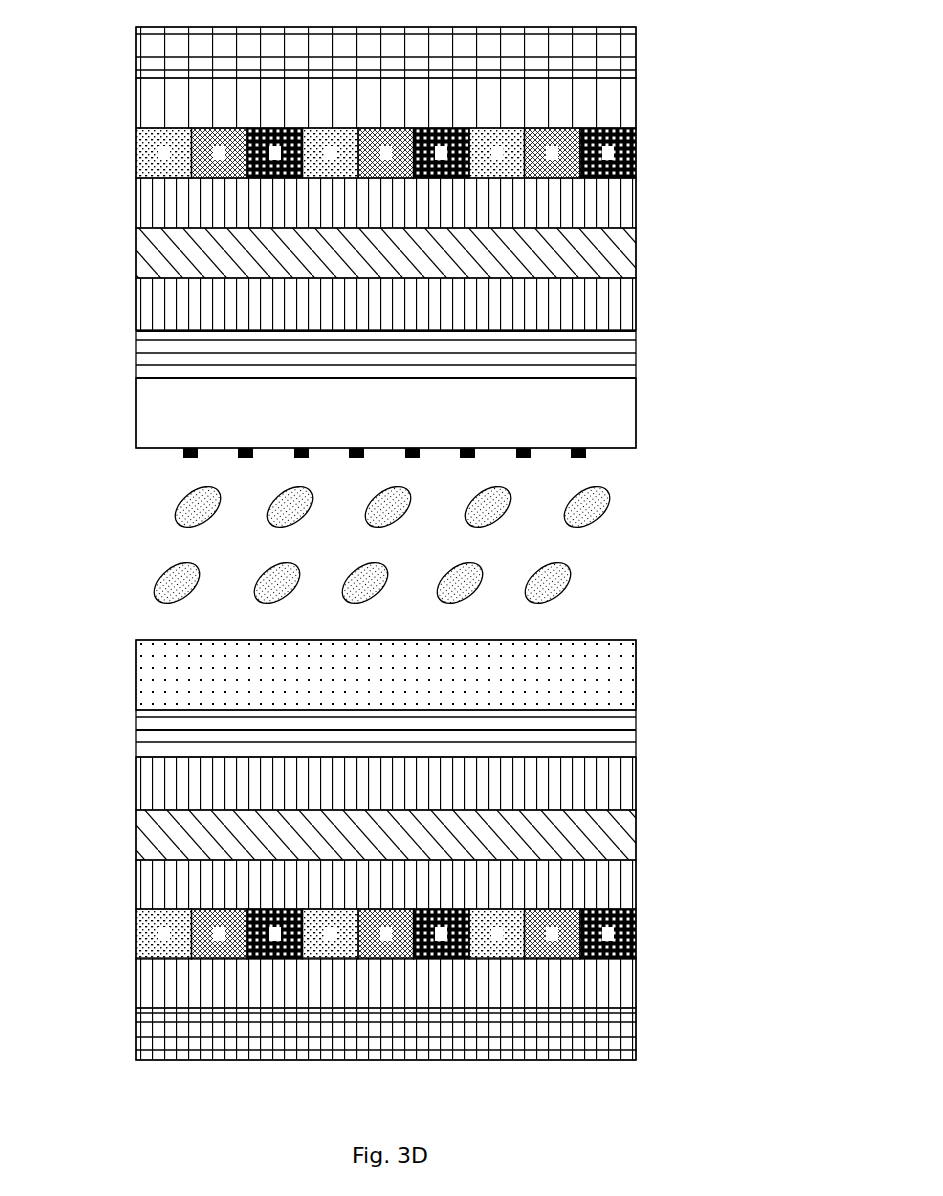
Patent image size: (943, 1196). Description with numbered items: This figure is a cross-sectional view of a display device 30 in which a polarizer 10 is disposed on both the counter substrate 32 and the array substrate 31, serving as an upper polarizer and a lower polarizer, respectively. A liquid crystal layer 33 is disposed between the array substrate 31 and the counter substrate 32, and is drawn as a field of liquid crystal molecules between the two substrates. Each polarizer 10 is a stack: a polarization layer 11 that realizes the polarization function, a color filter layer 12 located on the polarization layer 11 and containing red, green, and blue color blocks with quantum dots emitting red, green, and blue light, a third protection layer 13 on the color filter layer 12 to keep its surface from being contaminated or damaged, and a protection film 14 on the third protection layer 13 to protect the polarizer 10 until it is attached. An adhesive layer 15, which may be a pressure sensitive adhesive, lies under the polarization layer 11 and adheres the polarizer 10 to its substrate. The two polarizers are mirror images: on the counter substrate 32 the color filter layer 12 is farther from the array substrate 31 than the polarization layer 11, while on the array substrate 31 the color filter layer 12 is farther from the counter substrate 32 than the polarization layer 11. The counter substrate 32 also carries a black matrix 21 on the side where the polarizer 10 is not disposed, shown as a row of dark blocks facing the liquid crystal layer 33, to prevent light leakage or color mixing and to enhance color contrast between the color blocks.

The display device 30 is at (46, 38).
The polarizer 10 is at (136, 53).
The polarization layer 11 is at (636, 203).
The color filter layer 12 is at (636, 153).
The third protection layer 13 is at (636, 103).
The protection film 14 is at (636, 53).
The adhesive layer 15 is at (636, 353).
The black matrix 21 is at (246, 459).
The array substrate 31 is at (636, 675).
The counter substrate 32 is at (636, 412).
The liquid crystal layer 33 is at (566, 583).